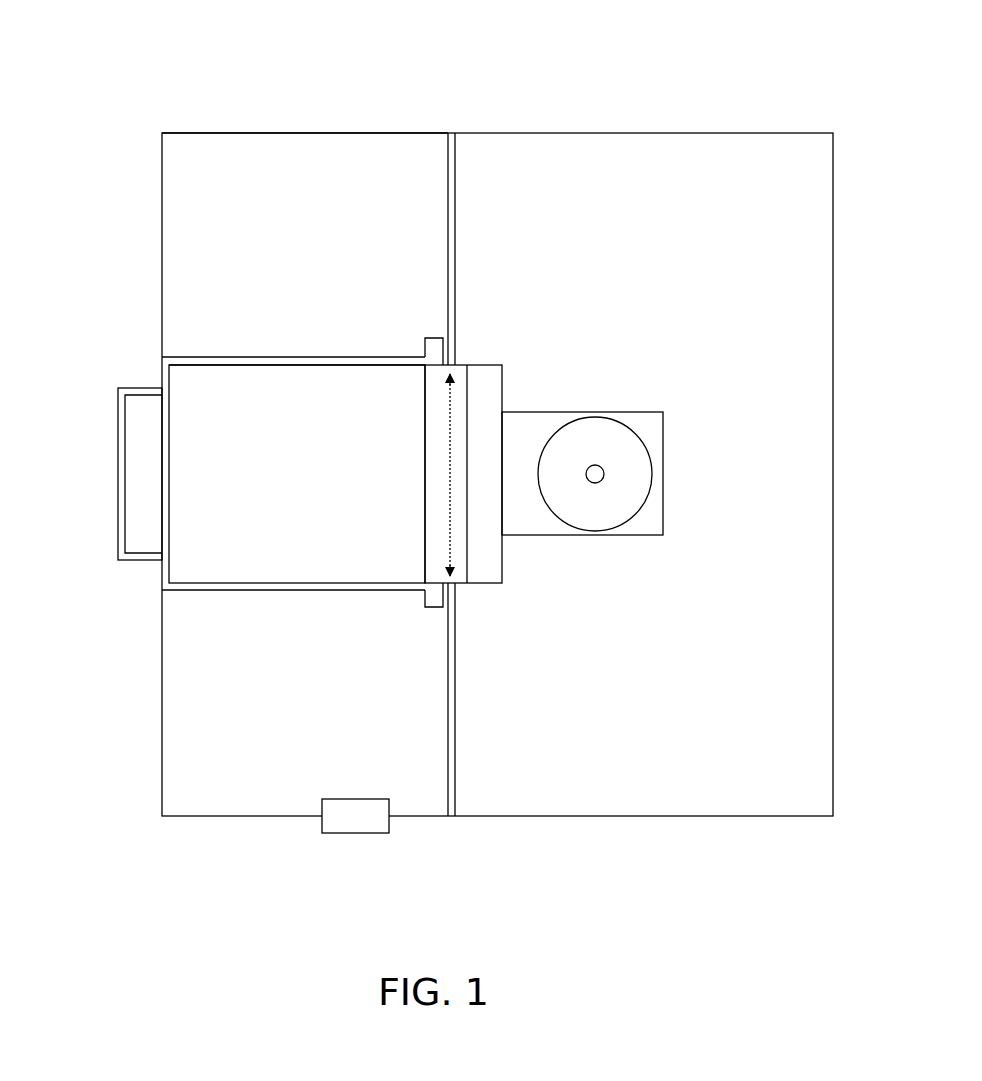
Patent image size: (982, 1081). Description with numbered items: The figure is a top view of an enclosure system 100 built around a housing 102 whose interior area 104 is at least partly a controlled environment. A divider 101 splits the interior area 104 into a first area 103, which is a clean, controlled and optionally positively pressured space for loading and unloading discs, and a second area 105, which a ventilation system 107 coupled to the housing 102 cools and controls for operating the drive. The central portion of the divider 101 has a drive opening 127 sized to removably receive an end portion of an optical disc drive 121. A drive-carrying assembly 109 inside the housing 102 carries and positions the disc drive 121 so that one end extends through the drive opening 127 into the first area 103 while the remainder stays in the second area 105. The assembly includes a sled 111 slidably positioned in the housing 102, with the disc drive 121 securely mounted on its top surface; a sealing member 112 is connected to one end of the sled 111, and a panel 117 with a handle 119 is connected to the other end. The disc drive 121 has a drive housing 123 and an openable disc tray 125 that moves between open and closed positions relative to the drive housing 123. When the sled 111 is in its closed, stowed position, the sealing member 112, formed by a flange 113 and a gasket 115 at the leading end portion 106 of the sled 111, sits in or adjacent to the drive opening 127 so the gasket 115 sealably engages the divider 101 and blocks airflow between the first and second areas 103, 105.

The enclosure system 100 is at (735, 35).
The divider 101 is at (458, 183).
The housing 102 is at (770, 130).
The first area 103 is at (813, 171).
The interior area 104 is at (397, 140).
The second area 105 is at (217, 171).
The leading end portion 106 is at (380, 592).
The ventilation system 107 is at (343, 822).
The drive-carrying assembly 109 is at (232, 356).
The sled 111 is at (280, 360).
The sealing member 112 is at (438, 325).
The flange 113 is at (437, 353).
The gasket 115 is at (436, 467).
The panel 117 is at (165, 380).
The handle 119 is at (120, 458).
The optical disc drive 121 is at (225, 540).
The drive housing 123 is at (287, 560).
The disc tray 125 is at (653, 420).
The drive opening 127 is at (452, 418).